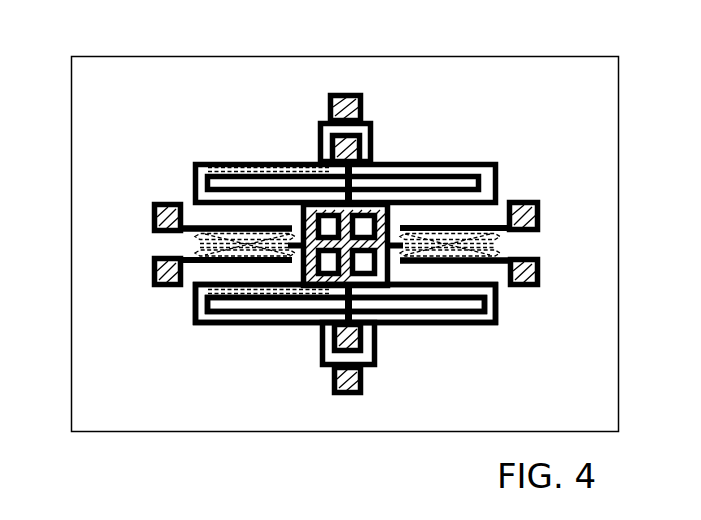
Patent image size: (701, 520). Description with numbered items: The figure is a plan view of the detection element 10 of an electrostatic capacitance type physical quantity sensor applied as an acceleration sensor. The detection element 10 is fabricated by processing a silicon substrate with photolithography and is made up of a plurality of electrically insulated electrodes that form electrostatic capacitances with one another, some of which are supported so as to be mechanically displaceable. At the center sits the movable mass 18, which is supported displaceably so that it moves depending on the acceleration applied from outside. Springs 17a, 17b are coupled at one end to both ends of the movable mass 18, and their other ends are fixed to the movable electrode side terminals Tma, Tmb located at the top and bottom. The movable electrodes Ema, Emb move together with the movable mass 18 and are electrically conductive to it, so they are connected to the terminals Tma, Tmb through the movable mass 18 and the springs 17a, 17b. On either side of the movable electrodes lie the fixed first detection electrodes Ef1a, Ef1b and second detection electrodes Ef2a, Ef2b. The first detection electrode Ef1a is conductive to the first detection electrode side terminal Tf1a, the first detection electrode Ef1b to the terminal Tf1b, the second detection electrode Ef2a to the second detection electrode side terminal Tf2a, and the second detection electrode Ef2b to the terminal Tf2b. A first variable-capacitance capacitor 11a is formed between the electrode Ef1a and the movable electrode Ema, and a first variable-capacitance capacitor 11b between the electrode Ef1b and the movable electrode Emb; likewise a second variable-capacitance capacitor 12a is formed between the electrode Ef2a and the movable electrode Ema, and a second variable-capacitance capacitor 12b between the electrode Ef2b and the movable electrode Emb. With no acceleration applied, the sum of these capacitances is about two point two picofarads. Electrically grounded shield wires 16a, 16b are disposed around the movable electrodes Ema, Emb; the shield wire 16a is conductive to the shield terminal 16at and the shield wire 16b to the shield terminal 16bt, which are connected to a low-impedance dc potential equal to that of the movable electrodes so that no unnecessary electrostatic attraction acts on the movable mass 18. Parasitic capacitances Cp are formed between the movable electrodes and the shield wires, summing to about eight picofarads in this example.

The detection element 10 is at (127, 57).
The shield terminal 16at is at (330, 100).
The movable electrode side terminal Tma is at (374, 128).
The shield wire 16a is at (500, 162).
The spring 17a is at (307, 160).
The parasitic capacitance Cp is at (263, 165).
The shield wire 16b is at (410, 327).
The spring 17b is at (300, 313).
The movable electrode side terminal Tmb is at (323, 347).
The shield terminal 16bt is at (350, 396).
The movable mass 18 is at (391, 217).
The first detection electrode side terminal Tf1a is at (153, 213).
The second detection electrode side terminal Tf2a is at (153, 265).
The first detection electrode side terminal Tf1b is at (540, 213).
The second detection electrode side terminal Tf2b is at (540, 265).
The first variable-capacitance capacitor 11a is at (247, 227).
The second variable-capacitance capacitor 12a is at (217, 227).
The first variable-capacitance capacitor 11b is at (422, 233).
The second variable-capacitance capacitor 12b is at (435, 253).
The first detection electrode Ef1a is at (217, 258).
The second detection electrode Ef2a is at (257, 262).
The movable electrode Ema is at (195, 308).
The first detection electrode Ef1b is at (490, 232).
The movable electrode Emb is at (473, 245).
The second detection electrode Ef2b is at (457, 262).